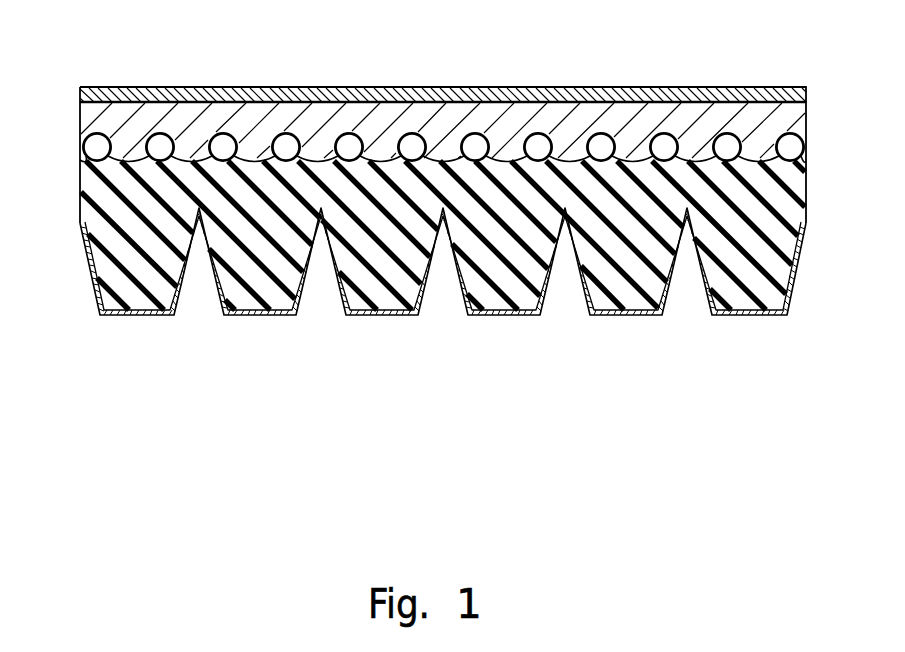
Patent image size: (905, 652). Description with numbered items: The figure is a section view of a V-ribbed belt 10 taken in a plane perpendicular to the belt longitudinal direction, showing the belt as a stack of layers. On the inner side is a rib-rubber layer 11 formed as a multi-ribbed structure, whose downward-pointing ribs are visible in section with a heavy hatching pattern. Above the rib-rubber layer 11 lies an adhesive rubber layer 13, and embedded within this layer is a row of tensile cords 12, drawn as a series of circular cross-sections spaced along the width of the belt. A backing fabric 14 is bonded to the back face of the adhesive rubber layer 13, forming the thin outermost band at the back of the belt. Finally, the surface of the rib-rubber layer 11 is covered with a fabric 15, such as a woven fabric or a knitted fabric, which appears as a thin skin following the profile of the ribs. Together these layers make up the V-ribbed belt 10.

The V-ribbed belt 10 is at (337, 383).
The rib-rubber layer 11 is at (111, 275).
The tensile cords 12 is at (347, 138).
The adhesive rubber layer 13 is at (563, 118).
The backing fabric 14 is at (434, 87).
The fabric 15 is at (502, 320).